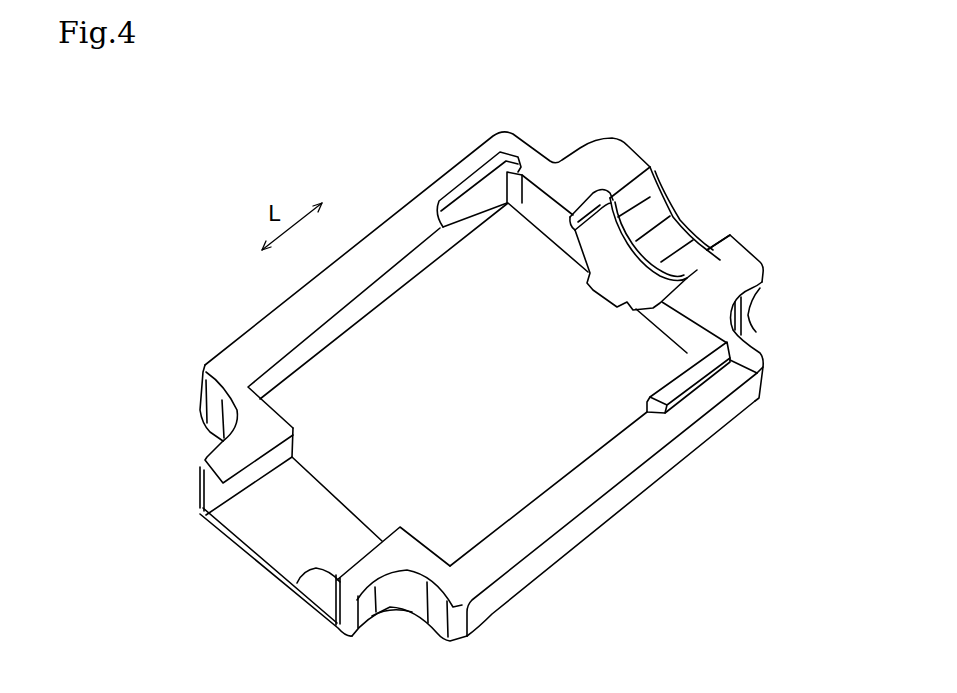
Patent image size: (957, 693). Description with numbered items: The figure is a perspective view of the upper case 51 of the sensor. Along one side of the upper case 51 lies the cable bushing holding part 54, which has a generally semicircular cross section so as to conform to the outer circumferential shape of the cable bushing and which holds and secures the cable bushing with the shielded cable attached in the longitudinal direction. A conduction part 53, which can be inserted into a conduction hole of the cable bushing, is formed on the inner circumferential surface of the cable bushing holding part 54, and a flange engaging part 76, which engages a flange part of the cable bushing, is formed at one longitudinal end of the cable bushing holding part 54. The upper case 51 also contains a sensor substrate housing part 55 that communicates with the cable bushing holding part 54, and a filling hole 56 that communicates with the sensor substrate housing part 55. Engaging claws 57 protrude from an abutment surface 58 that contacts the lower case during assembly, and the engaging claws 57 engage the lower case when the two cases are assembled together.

The upper case 51 is at (742, 147).
The conduction part 53 is at (660, 247).
The cable bushing holding part 54 is at (638, 190).
The sensor substrate housing part 55 is at (557, 443).
The filling hole 56 is at (295, 584).
The engaging claw 57 is at (471, 188).
The abutment surface 58 is at (505, 548).
The flange engaging part 76 is at (590, 238).